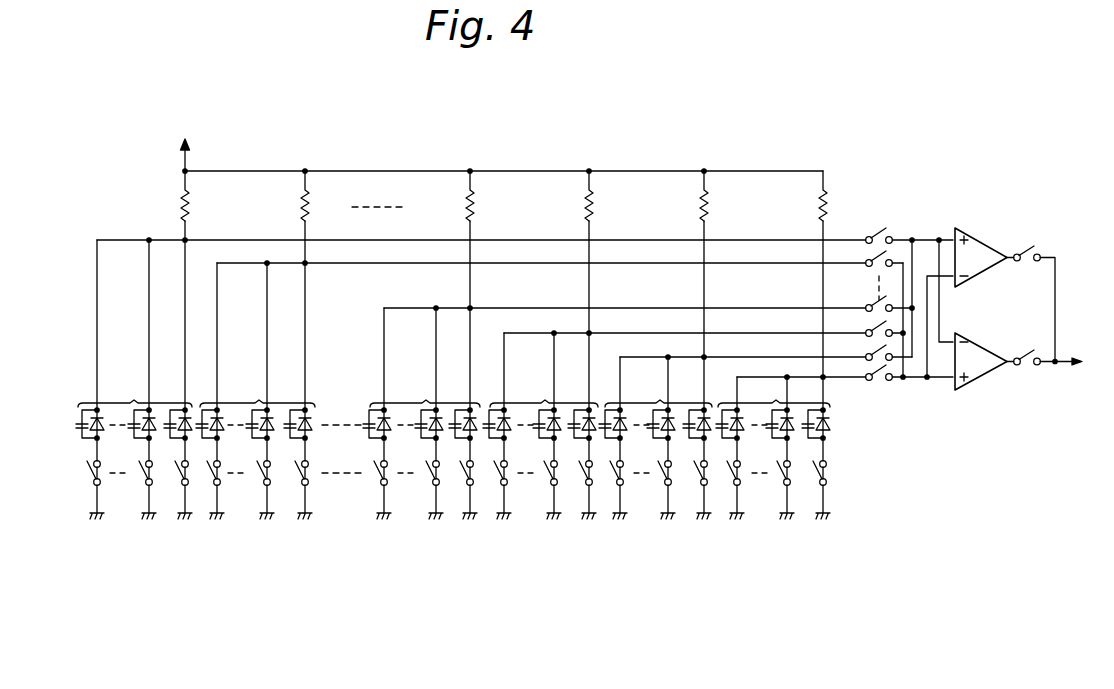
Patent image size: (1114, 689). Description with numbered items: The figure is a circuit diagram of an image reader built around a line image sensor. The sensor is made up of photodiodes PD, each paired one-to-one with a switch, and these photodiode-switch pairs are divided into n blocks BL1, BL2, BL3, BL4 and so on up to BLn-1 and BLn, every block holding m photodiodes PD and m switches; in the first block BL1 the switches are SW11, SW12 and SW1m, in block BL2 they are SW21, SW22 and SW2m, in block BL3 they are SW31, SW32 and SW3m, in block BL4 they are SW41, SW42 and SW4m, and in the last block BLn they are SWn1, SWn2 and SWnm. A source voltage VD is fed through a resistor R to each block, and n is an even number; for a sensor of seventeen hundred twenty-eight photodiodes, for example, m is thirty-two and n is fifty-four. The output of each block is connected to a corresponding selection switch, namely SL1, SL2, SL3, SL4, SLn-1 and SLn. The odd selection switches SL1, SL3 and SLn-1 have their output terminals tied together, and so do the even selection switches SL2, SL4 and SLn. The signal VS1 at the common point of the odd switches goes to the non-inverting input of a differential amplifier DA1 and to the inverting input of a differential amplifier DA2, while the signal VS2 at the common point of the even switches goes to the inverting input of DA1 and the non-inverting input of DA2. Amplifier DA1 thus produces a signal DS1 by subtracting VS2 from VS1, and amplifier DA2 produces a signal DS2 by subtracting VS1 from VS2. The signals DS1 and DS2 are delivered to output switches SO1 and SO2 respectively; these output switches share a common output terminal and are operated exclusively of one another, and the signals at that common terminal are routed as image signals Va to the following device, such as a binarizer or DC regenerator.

The source voltage VD is at (499, 144).
The resistor R is at (815, 204).
The selection switch SLn is at (877, 234).
The selection switch SLn-1 is at (875, 258).
The selection switch SL4 is at (875, 301).
The selection switch SL3 is at (875, 326).
The selection switch SL2 is at (875, 350).
The selection switch SL1 is at (875, 372).
The signal VS1 is at (927, 377).
The signal VS2 is at (925, 236).
The differential amplifier DA1 is at (984, 389).
The differential amplifier DA2 is at (982, 241).
The output switch SO1 is at (1032, 356).
The output switch SO2 is at (1038, 248).
The signal DS1 is at (1018, 366).
The signal DS2 is at (1018, 262).
The image signals Va is at (1066, 366).
The block BLn is at (135, 350).
The block BLn-1 is at (251, 401).
The block BL4 is at (425, 350).
The block BL3 is at (544, 350).
The block BL2 is at (658, 350).
The block BL1 is at (774, 350).
The photodiode PD is at (843, 452).
The switch SWnm is at (88, 490).
The switch SWn2 is at (140, 488).
The switch SWn1 is at (176, 490).
The switch SW4m is at (375, 490).
The switch SW42 is at (427, 488).
The switch SW41 is at (461, 490).
The switch SW3m is at (495, 488).
The switch SW32 is at (545, 490).
The switch SW31 is at (580, 490).
The switch SW2m is at (611, 488).
The switch SW22 is at (659, 490).
The switch SW21 is at (695, 488).
The switch SW1m is at (728, 490).
The switch SW12 is at (778, 488).
The switch SW11 is at (814, 490).